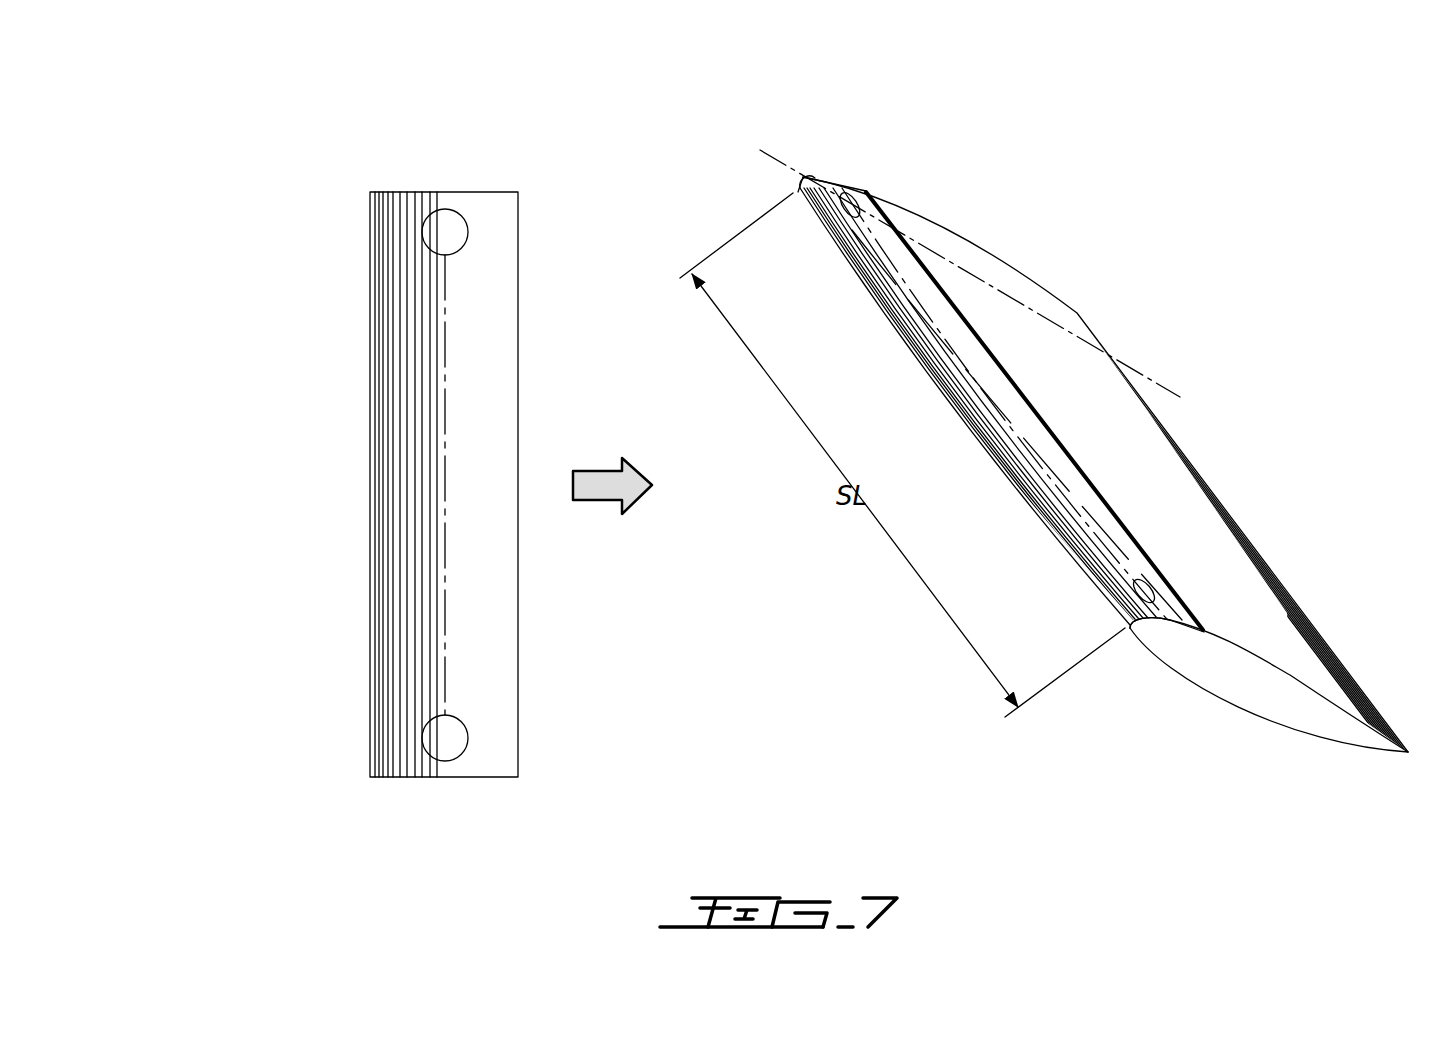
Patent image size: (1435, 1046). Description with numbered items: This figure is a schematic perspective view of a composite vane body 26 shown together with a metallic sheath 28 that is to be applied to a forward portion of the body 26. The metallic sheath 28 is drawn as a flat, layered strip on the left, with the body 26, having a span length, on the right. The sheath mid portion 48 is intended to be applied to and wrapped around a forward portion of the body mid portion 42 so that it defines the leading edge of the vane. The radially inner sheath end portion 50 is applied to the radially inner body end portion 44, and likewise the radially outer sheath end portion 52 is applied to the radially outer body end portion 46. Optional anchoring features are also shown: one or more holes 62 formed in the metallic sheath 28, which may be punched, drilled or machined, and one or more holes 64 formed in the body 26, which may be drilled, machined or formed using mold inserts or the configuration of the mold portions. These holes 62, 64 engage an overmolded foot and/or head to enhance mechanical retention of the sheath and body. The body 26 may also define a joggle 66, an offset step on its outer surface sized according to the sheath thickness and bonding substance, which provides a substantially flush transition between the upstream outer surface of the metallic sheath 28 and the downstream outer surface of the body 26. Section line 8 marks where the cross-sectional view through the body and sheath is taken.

The metallic sheath 28 is at (193, 220).
The radially outer sheath end portion 52 is at (395, 232).
The sheath mid portion 48 is at (398, 425).
The radially inner sheath end portion 50 is at (398, 738).
The holes 62 is at (445, 232).
The body 26 is at (1030, 178).
The body mid portion 42 is at (980, 378).
The radially inner body end portion 44 is at (1128, 600).
The radially outer body end portion 46 is at (822, 206).
The holes 64 is at (851, 198).
The joggle 66 is at (1065, 455).
The line 8- 8 is at (760, 150).